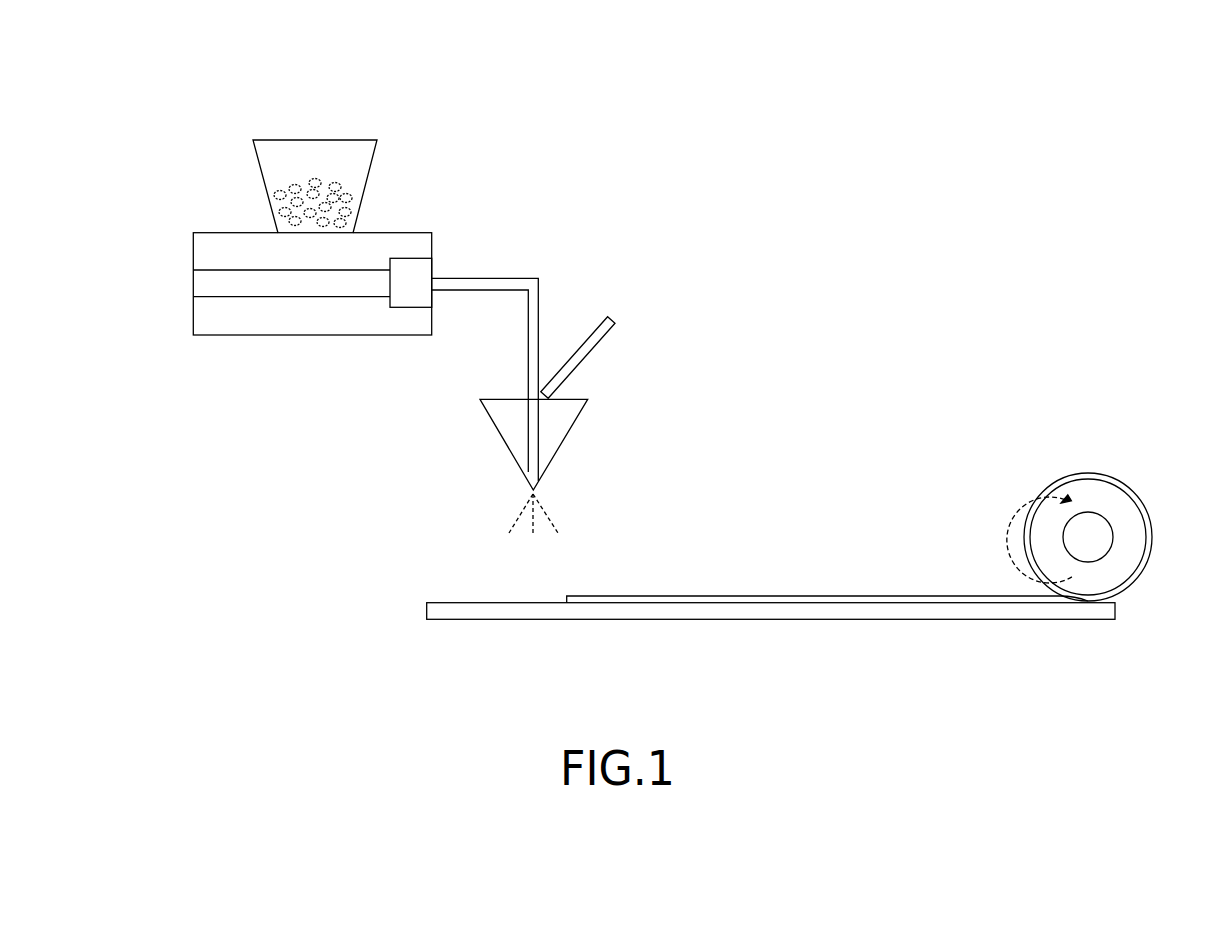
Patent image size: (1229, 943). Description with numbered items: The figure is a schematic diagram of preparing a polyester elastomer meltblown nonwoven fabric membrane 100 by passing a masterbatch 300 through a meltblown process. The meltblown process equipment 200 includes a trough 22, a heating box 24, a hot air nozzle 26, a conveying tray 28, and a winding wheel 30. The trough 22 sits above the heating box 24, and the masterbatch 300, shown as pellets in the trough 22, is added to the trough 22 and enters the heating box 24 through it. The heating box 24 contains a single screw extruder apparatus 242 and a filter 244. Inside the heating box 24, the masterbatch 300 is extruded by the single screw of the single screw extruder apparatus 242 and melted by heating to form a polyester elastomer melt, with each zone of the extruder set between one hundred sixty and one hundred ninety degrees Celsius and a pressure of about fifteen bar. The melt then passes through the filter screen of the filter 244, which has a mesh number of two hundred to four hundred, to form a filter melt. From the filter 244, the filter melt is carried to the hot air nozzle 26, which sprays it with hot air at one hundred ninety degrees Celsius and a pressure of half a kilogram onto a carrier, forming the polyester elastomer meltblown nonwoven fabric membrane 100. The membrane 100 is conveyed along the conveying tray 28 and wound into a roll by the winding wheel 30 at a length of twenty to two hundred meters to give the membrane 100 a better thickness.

The meltblown process equipment 200 is at (830, 108).
The trough 22 is at (348, 148).
The masterbatch 300 is at (273, 176).
The heating box 24 is at (257, 318).
The single screw extruder apparatus 242 is at (228, 280).
The filter 244 is at (408, 272).
The hot air nozzle 26 is at (614, 369).
The conveying tray 28 is at (462, 608).
The polyester elastomer meltblown nonwoven fabric membrane 100 is at (908, 603).
The winding wheel 30 is at (1120, 505).